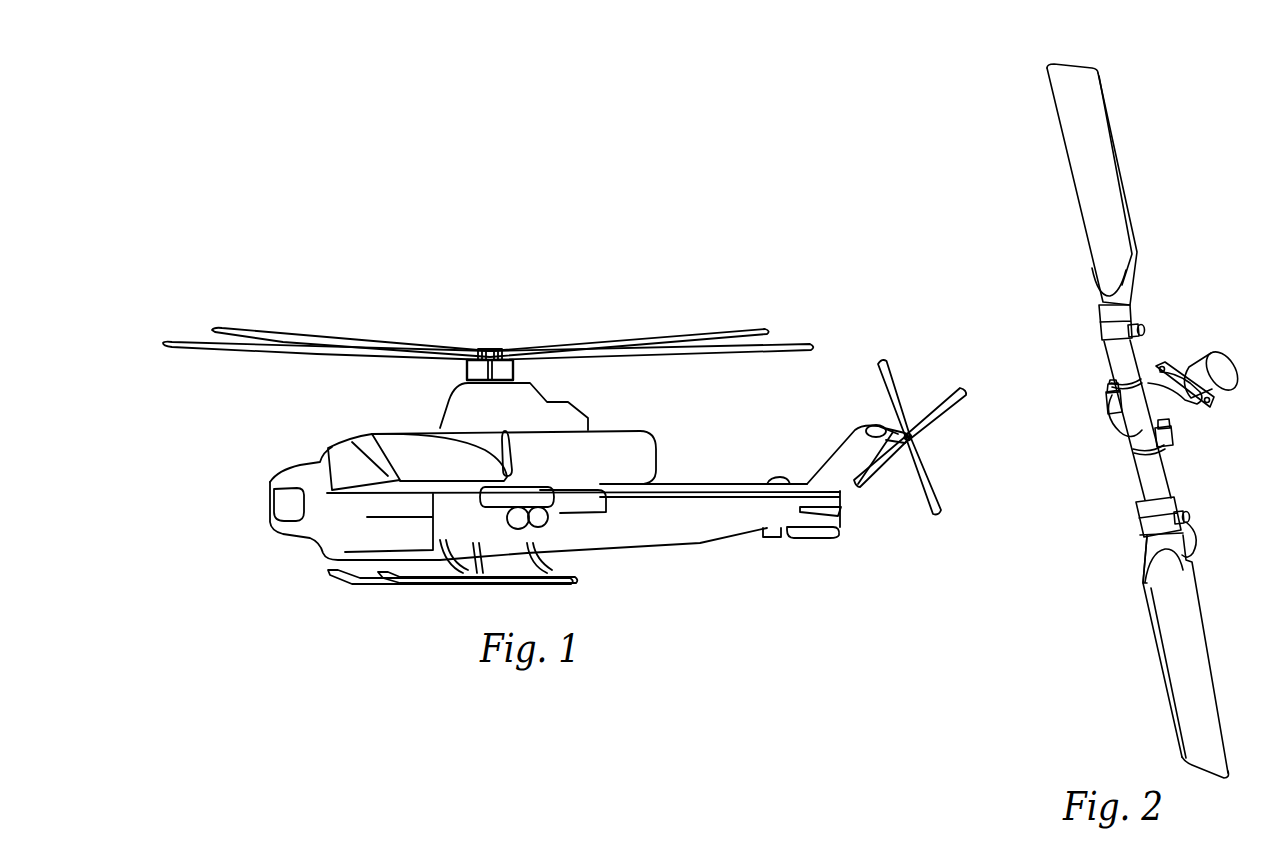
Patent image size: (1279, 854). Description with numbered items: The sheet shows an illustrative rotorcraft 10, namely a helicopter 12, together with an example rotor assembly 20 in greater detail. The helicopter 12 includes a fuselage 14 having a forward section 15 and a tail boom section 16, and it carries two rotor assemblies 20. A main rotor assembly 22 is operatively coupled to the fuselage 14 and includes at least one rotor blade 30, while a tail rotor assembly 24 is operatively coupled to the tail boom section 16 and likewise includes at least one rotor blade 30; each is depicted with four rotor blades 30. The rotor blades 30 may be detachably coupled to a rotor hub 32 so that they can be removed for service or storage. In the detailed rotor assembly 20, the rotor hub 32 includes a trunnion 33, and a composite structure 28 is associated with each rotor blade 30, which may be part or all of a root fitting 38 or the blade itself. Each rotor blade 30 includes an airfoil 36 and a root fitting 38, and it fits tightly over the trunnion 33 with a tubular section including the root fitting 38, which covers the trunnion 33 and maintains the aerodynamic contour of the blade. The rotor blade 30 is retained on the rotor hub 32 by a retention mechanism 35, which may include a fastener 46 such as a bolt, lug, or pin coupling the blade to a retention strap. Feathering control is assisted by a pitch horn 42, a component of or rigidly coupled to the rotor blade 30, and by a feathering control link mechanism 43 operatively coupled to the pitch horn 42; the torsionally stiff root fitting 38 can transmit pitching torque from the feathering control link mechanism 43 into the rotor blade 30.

In FIG. 1, the rotorcraft 10 is at (243, 221).
In FIG. 1, the helicopter 12 is at (319, 241).
In FIG. 1, the fuselage 14 is at (285, 433).
In FIG. 1, the forward section 15 is at (333, 454).
In FIG. 1, the tail boom section 16 is at (720, 484).
In FIG. 1, the rotor assembly 20 is at (481, 332).
In FIG. 2, the rotor assembly 20 is at (977, 112).
In FIG. 1, the main rotor assembly 22 is at (519, 345).
In FIG. 1, the tail rotor assembly 24 is at (926, 442).
In FIG. 2, the composite structure 28 is at (1093, 298).
In FIG. 1, the rotor blade 30 is at (747, 326).
In FIG. 2, the rotor blade 30 is at (1076, 256).
In FIG. 1, the rotor hub 32 is at (490, 345).
In FIG. 2, the rotor hub 32 is at (1115, 429).
In FIG. 2, the trunnion 33 is at (1128, 435).
In FIG. 2, the retention mechanism 35 is at (1203, 522).
In FIG. 2, the airfoil 36 is at (1070, 178).
In FIG. 2, the root fitting 38 is at (1097, 333).
In FIG. 2, the pitch horn 42 is at (1167, 452).
In FIG. 2, the feathering control link mechanism 43 is at (1192, 427).
In FIG. 2, the fastener 46 is at (1182, 522).